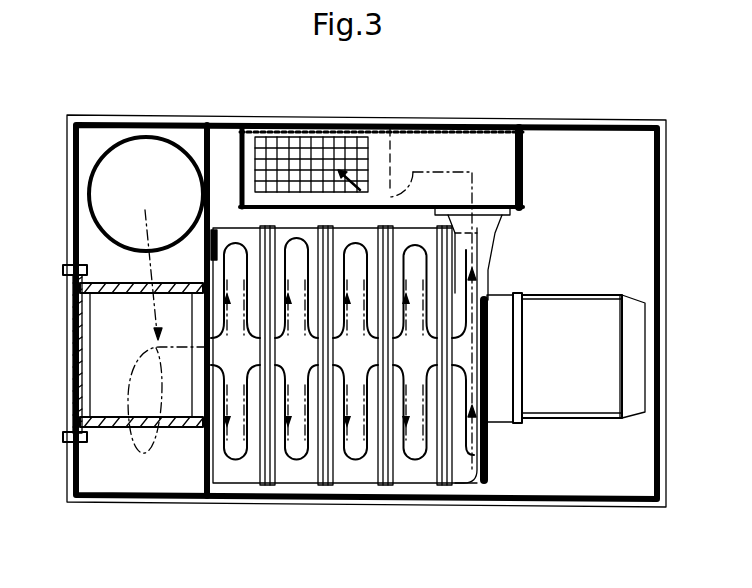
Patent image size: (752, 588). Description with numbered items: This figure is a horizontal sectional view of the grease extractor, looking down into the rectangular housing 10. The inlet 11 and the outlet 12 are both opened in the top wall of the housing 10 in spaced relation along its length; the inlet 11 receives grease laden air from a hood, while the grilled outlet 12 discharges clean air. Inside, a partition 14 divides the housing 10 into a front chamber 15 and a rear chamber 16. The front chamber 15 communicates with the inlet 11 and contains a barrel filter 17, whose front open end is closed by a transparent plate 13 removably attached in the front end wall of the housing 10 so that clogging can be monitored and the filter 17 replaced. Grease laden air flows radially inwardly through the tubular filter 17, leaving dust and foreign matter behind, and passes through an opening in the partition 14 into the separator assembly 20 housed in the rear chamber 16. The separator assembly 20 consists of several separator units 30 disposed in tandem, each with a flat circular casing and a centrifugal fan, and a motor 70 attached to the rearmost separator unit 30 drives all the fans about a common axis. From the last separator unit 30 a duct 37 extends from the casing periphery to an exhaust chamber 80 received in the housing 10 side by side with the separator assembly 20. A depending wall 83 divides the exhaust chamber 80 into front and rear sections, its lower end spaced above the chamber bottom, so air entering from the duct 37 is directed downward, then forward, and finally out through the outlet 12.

The housing 10 is at (668, 117).
The inlet 11 is at (103, 172).
The outlet 12 is at (307, 145).
The transparent plate 13 is at (75, 312).
The partition 14 is at (203, 140).
The front chamber 15 is at (98, 133).
The rear chamber 16 is at (622, 225).
The barrel filter 17 is at (117, 421).
The separator assembly 20 is at (353, 490).
The separator unit 30 is at (233, 468).
The duct 37 is at (537, 273).
The motor 70 is at (557, 397).
The exhaust chamber 80 is at (525, 160).
The depending wall 83 is at (397, 133).